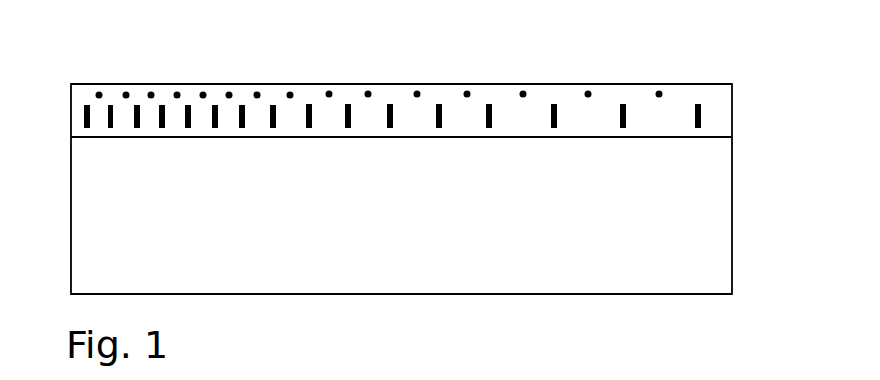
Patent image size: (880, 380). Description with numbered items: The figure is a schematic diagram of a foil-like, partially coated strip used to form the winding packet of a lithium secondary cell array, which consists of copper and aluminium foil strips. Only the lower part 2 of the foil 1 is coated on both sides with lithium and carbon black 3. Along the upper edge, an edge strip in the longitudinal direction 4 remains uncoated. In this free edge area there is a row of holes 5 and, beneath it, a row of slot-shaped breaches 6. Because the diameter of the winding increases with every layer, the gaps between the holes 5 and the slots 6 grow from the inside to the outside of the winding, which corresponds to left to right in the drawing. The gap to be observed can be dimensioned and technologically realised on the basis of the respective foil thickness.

The foil 1 is at (582, 70).
The lower part 2 is at (71, 205).
The lithium and carbon black 3 is at (609, 272).
The edge strip in the longitudinal direction 4 is at (675, 104).
The row of holes 5 is at (99, 92).
The row of slot-shaped breaches 6 is at (84, 118).